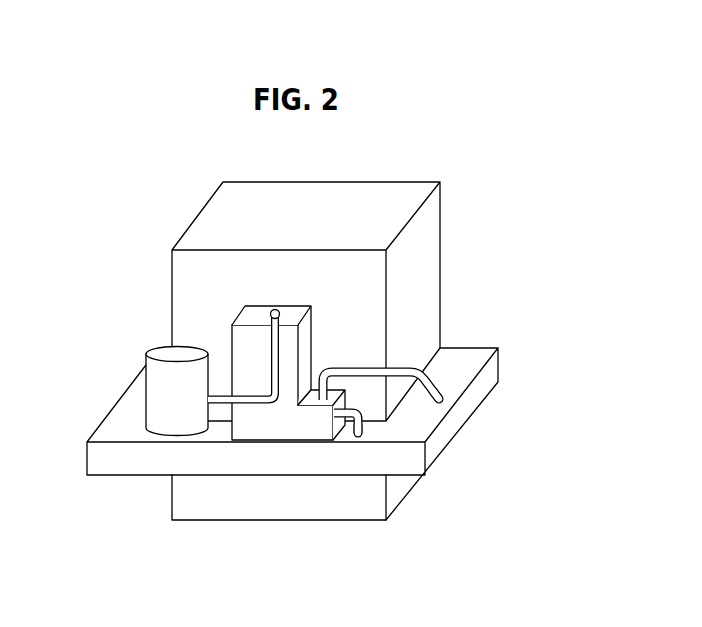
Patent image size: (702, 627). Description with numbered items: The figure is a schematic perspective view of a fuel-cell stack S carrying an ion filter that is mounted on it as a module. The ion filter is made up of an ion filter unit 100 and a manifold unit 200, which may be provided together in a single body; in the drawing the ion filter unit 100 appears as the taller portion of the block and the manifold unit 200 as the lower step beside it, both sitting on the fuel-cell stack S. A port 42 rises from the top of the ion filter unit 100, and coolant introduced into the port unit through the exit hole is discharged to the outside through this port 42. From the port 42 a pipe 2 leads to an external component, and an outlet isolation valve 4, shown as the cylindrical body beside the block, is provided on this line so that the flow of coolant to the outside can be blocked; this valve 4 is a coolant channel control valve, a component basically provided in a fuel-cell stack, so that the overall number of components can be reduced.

The pipe 2 is at (245, 398).
The outlet isolation valve 4 is at (158, 413).
The port 42 is at (272, 309).
The ion filter unit 100 is at (335, 443).
The manifold unit 200 is at (322, 418).
The fuel-cell stack S is at (465, 355).